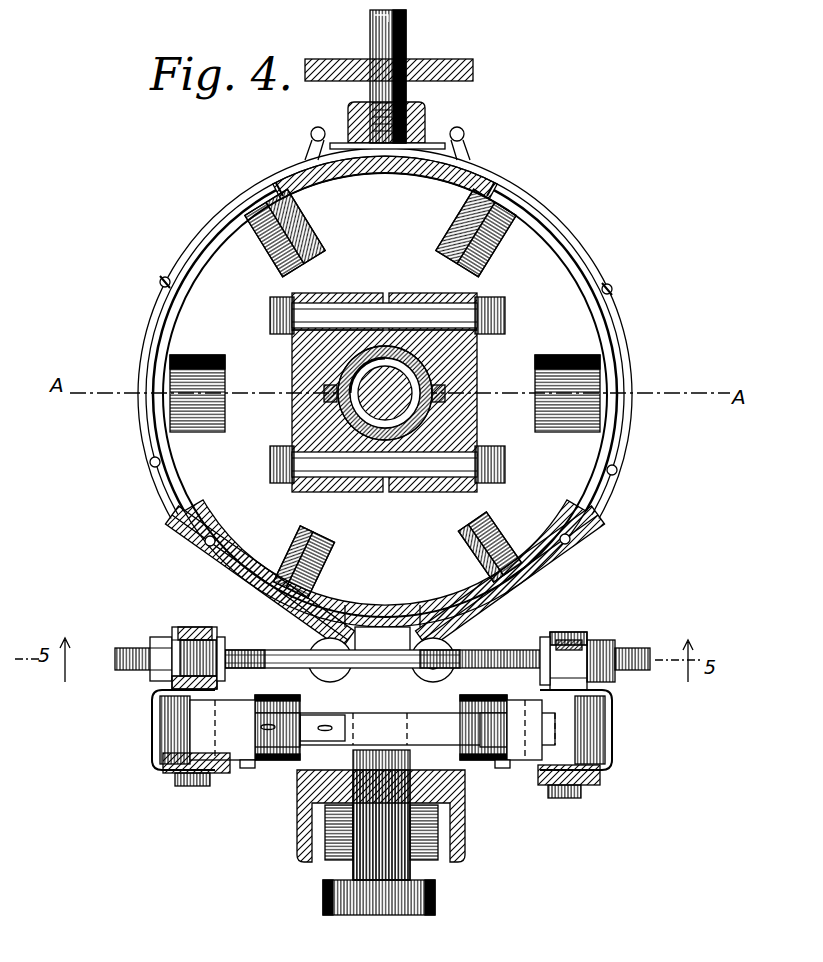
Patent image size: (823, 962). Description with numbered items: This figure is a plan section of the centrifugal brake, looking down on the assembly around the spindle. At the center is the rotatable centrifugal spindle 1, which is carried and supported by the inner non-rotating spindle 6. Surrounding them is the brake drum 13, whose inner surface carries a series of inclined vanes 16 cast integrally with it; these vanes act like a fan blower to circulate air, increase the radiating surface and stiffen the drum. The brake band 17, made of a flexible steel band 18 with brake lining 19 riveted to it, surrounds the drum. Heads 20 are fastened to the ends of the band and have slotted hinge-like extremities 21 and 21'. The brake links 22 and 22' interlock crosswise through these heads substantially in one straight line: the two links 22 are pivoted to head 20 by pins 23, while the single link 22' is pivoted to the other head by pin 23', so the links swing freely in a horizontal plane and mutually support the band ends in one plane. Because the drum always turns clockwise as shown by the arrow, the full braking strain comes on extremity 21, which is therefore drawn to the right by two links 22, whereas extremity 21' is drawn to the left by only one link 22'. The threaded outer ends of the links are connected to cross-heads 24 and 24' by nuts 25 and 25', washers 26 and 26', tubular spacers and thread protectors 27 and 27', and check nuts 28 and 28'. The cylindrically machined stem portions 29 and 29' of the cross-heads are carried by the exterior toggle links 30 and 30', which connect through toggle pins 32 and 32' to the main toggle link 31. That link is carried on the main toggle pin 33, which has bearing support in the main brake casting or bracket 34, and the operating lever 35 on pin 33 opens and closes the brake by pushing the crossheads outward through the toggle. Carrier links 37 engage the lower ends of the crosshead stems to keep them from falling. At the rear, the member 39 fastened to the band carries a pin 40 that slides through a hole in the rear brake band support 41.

The rotatable centrifugal spindle 1 is at (470, 421).
The inner non-rotating spindle 6 is at (373, 380).
The brake drum 13 is at (157, 441).
The vanes 16 is at (463, 230).
The brake band 17 is at (204, 232).
The flexible steel band 18 is at (186, 246).
The brake lining 19 is at (165, 276).
The heads 20 is at (236, 594).
The hinge-like extremity 21 is at (371, 610).
The hinge-like extremity 21' is at (396, 598).
The brake links 22 is at (485, 673).
The brake link 22' is at (342, 666).
The pins 23 is at (318, 710).
The pin 23' is at (437, 674).
The cross-head 24 is at (588, 645).
The cross-head 24' is at (173, 641).
The nut 25 is at (657, 648).
The nut 25' is at (93, 650).
The washer 26 is at (615, 649).
The washer 26' is at (173, 644).
The tubular spacer and thread protector 27 is at (561, 629).
The tubular spacer and thread protector 27' is at (207, 620).
The check nut 28 is at (532, 650).
The check nut 28' is at (239, 652).
The stem portion 29 is at (573, 795).
The stem portion 29' is at (193, 791).
The exterior toggle link 30 is at (527, 757).
The exterior toggle link 30' is at (222, 758).
The main toggle link 31 is at (266, 762).
The toggle pin 32 is at (497, 798).
The toggle pin 32' is at (245, 800).
The main toggle pin 33 is at (410, 760).
The main brake casting or bracket 34 is at (310, 800).
The operating lever 35 is at (436, 898).
The carrier links 37 is at (168, 768).
The supporting member 39 is at (430, 116).
The pin 40 is at (396, 46).
The rear brake band support 41 is at (455, 60).